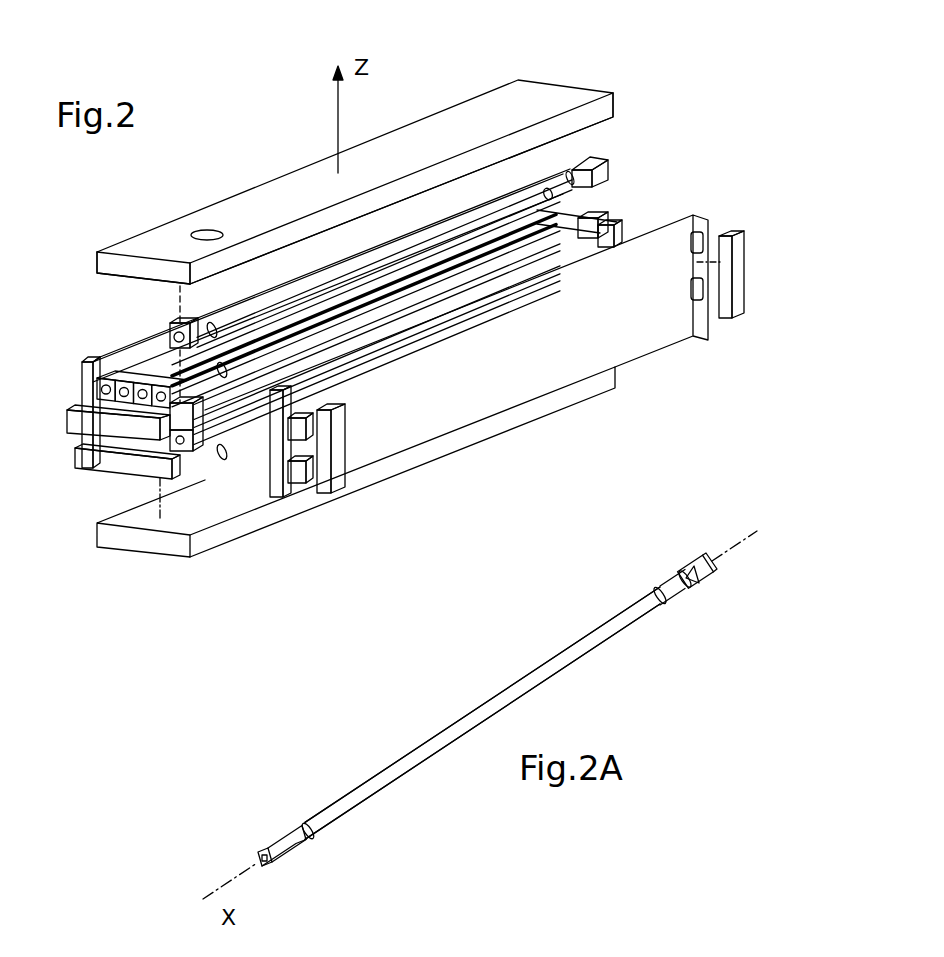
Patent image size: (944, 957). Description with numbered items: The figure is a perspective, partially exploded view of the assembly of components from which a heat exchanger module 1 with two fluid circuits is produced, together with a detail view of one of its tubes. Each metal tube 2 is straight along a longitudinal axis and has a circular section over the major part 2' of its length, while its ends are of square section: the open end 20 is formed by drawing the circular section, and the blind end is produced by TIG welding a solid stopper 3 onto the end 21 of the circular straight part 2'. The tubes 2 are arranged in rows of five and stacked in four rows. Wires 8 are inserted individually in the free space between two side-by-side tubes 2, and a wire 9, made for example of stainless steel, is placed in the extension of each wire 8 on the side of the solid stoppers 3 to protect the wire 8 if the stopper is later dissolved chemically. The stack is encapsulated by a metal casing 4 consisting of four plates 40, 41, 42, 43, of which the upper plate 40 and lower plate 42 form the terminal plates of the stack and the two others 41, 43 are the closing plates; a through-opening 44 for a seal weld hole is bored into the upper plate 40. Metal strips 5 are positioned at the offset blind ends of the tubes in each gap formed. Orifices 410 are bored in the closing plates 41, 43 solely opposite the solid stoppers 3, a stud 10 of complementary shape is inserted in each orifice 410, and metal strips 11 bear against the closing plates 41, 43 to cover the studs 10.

In FIG. 2, the heat exchanger module 1 is at (702, 100).
In FIG. 2, the metal tube 2 is at (373, 286).
In FIG. 2A, the metal tube 2 is at (482, 713).
In FIG. 2A, the circular straight part 2' is at (482, 713).
In FIG. 2, the solid stopper 3 is at (180, 455).
In FIG. 2A, the solid stopper 3 is at (692, 572).
In FIG. 2, the metal casing 4 is at (600, 63).
In FIG. 2, the metal strip 5 is at (68, 413).
In FIG. 2, the wire 8 is at (368, 297).
In FIG. 2, the wire 9 is at (285, 357).
In FIG. 2, the stud 10 is at (310, 428).
In FIG. 2, the metal strip 11 is at (80, 398).
In FIG. 2, the open end 20 is at (190, 332).
In FIG. 2A, the open end 20 is at (260, 863).
In FIG. 2, the end of the circular straight part 21 is at (553, 190).
In FIG. 2A, the end of the circular straight part 21 is at (650, 608).
In FIG. 2, the upper terminal plate 40 is at (287, 186).
In FIG. 2, the closing plate 41 is at (490, 380).
In FIG. 2, the lower terminal plate 42 is at (133, 526).
In FIG. 2, the closing plate 43 is at (103, 360).
In FIG. 2, the through-opening 44 is at (207, 233).
In FIG. 2, the orifice 410 is at (702, 243).